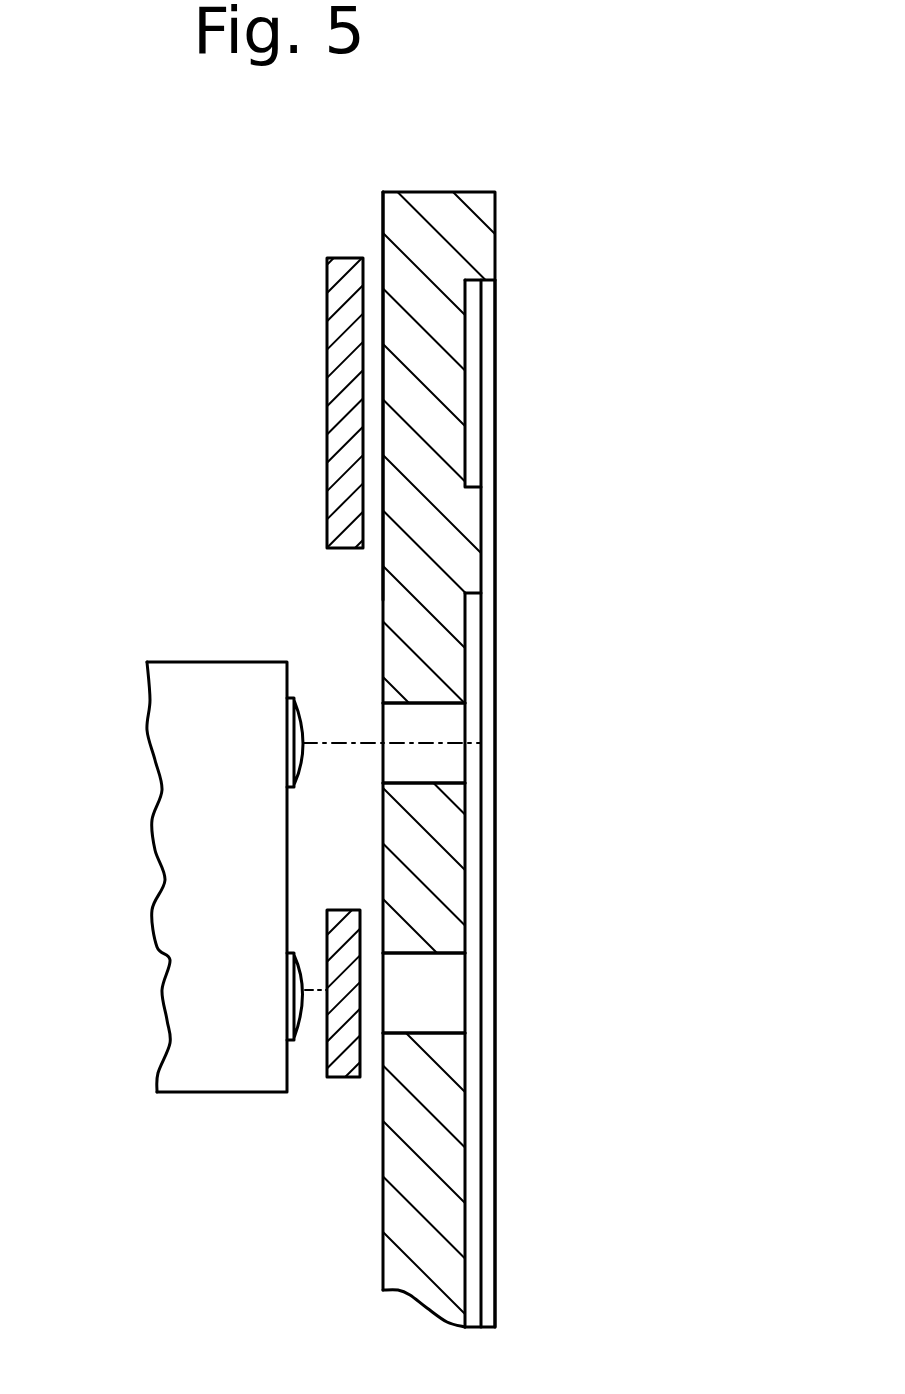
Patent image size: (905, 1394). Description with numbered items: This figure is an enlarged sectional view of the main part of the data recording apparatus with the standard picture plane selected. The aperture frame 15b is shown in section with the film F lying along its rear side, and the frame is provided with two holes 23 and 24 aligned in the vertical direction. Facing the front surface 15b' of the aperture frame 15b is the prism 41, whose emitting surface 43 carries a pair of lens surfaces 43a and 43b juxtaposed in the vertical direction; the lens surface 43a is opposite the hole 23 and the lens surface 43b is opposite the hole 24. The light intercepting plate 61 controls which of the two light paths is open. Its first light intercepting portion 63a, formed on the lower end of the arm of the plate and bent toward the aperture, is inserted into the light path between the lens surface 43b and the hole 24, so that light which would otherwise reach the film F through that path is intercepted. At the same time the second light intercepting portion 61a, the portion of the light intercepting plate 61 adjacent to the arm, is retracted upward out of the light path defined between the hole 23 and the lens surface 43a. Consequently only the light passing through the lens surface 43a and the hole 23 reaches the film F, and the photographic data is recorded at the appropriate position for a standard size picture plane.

The aperture frame 15b is at (507, 759).
The front surface of the aperture frame 15b' is at (244, 396).
The film F is at (495, 632).
The hole 23 is at (465, 704).
The hole 24 is at (430, 1033).
The light intercepting plate 61 is at (213, 403).
The second light intercepting portion 61a is at (327, 388).
The first light intercepting portion 63a is at (330, 1080).
The prism 41 is at (186, 913).
The emitting surface 43 is at (186, 913).
The lens surface 43a is at (303, 725).
The lens surface 43b is at (293, 1038).